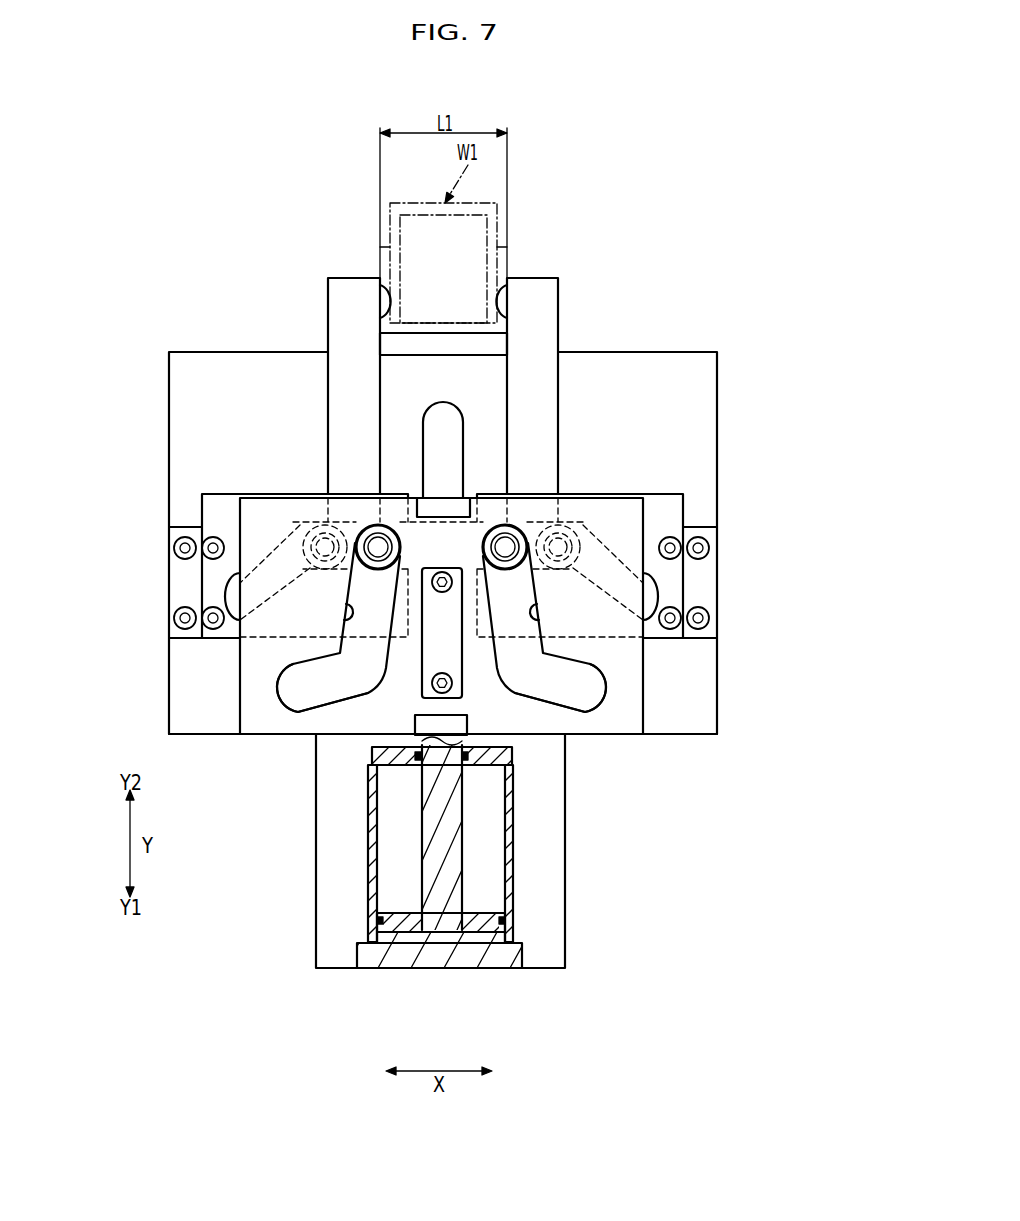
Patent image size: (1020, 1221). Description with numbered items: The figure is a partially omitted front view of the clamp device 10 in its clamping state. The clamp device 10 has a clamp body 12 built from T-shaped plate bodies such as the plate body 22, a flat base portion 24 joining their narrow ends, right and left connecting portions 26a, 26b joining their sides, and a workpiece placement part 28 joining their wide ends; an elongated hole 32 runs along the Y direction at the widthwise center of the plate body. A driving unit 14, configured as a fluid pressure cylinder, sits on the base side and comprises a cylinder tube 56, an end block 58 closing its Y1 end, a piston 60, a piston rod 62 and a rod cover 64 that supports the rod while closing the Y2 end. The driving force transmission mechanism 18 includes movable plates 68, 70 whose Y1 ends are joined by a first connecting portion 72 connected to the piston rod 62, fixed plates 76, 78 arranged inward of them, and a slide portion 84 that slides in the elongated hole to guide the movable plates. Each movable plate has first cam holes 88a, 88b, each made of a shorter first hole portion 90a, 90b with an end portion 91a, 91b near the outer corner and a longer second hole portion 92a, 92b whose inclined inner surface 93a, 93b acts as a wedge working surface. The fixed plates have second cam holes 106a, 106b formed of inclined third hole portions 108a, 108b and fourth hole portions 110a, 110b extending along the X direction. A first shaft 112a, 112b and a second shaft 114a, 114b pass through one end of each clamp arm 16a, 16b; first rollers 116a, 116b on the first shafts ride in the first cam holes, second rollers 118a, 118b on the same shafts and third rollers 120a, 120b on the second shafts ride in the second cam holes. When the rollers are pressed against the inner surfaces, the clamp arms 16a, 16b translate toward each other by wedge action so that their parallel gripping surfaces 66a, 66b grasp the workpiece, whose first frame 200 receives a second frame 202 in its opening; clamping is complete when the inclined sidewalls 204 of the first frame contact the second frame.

The clamp device 10 is at (451, 456).
The clamp body 12 is at (451, 505).
The driving unit 14 is at (521, 782).
The clamp arm 16a is at (545, 293).
The clamp arm 16b is at (343, 293).
The driving force transmission mechanism 18 is at (652, 346).
The plate body 22 is at (706, 702).
The base portion 24 is at (410, 954).
The connecting portion 26a is at (708, 585).
The connecting portion 26b is at (175, 586).
The workpiece placement part 28 is at (462, 347).
The elongated hole 32 is at (437, 420).
The cylinder tube 56 is at (509, 853).
The end block 58 is at (463, 944).
The piston 60 is at (392, 920).
The piston rod 62 is at (441, 816).
The rod cover 64 is at (438, 508).
The gripping surface 66a is at (505, 312).
The gripping surface 66b is at (382, 311).
The movable plate 68 is at (440, 642).
The movable plate 70 is at (253, 727).
The first connecting portion 72 is at (443, 724).
The fixed plate 76 is at (402, 565).
The fixed plate 78 is at (212, 508).
The slide portion 84 is at (425, 570).
The first cam hole 88a is at (494, 526).
The first cam hole 88b is at (389, 526).
The first hole portion 90a is at (587, 658).
The first hole portion 90b is at (296, 658).
The end portion 91a is at (598, 698).
The end portion 91b is at (285, 698).
The second hole portion 92a is at (519, 591).
The second hole portion 92b is at (364, 591).
The inner surface 93a is at (538, 614).
The inner surface 93b is at (345, 614).
The second cam hole 106a is at (658, 598).
The second cam hole 106b is at (225, 598).
The third hole portion 108a is at (653, 612).
The third hole portion 108b is at (230, 612).
The fourth hole portion 110a is at (525, 522).
The fourth hole portion 110b is at (358, 522).
The first shaft 112a is at (503, 560).
The first shaft 112b is at (380, 560).
The second shaft 114a is at (635, 500).
The second shaft 114b is at (249, 500).
The first roller 116a is at (590, 495).
The first roller 116b is at (303, 495).
The second roller 118a is at (534, 538).
The second roller 118b is at (349, 538).
The third roller 120a is at (582, 567).
The third roller 120b is at (305, 566).
The first frame 200 is at (430, 330).
The second frame 202 is at (395, 212).
The sidewalls 204 is at (507, 254).